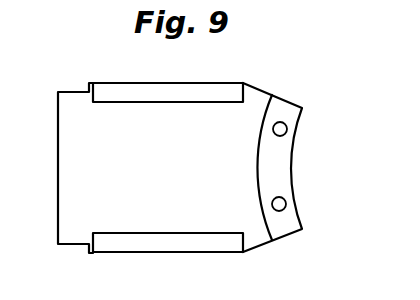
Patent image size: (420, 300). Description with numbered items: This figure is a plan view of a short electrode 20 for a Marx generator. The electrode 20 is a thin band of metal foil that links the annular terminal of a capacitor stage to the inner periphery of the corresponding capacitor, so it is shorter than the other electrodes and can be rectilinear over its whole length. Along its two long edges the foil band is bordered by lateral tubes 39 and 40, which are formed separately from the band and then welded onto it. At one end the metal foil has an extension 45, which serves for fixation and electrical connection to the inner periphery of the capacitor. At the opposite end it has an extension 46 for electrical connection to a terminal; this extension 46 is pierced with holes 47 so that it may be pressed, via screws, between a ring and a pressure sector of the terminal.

The electrode 20 is at (136, 128).
The lateral tube 39 is at (206, 84).
The lateral tube 40 is at (205, 250).
The extension 45 is at (63, 148).
The extension 46 is at (287, 182).
The hole 47 is at (287, 130).